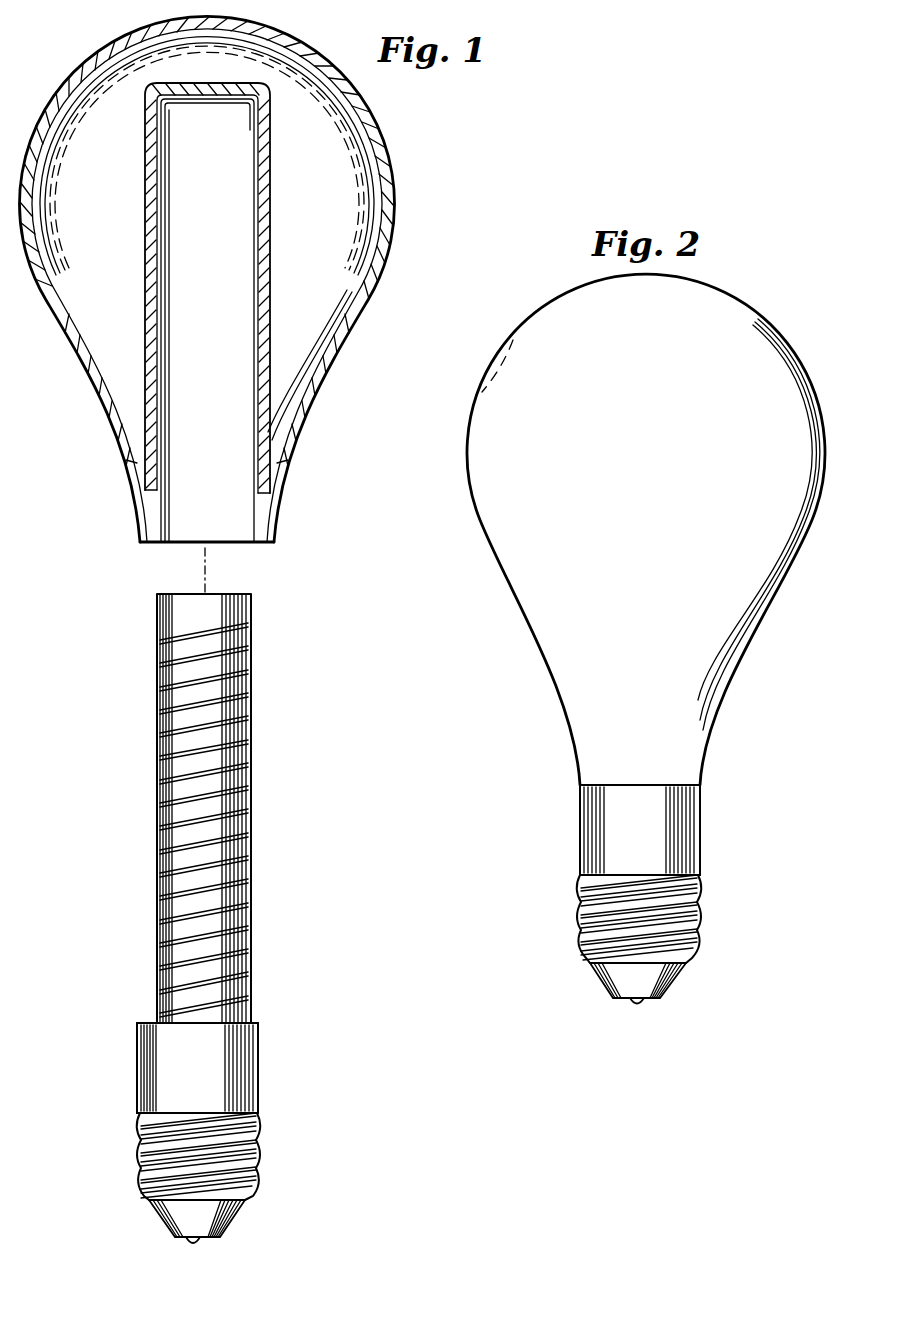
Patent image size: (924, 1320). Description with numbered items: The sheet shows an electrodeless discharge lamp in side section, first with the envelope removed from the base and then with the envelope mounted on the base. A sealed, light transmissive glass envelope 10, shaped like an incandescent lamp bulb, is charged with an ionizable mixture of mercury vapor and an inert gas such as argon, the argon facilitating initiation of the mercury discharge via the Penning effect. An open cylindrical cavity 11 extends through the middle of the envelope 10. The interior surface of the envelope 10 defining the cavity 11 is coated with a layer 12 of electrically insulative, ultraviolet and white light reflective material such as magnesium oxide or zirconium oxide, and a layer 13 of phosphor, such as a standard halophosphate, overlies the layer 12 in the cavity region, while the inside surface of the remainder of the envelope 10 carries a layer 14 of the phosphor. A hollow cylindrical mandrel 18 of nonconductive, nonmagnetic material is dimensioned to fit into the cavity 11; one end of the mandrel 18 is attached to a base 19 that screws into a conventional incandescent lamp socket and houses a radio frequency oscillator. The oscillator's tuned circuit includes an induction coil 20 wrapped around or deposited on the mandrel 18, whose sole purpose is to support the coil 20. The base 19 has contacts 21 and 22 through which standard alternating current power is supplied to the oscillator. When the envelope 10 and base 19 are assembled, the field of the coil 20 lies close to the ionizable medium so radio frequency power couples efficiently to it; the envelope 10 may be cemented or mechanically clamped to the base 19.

In FIG. 1, the glass envelope 10 is at (370, 133).
In FIG. 2, the glass envelope 10 is at (800, 367).
In FIG. 1, the cylindrical cavity 11 is at (236, 530).
In FIG. 1, the layer of reflective material 12 is at (258, 494).
In FIG. 1, the layer of phosphor 13 is at (268, 303).
In FIG. 1, the layer of the phosphor 14 is at (85, 356).
In FIG. 1, the mandrel 18 is at (157, 613).
In FIG. 1, the base 19 is at (268, 1068).
In FIG. 2, the base 19 is at (557, 908).
In FIG. 1, the induction coil 20 is at (160, 668).
In FIG. 1, the contact 21 is at (198, 1243).
In FIG. 1, the contact 22 is at (140, 1138).